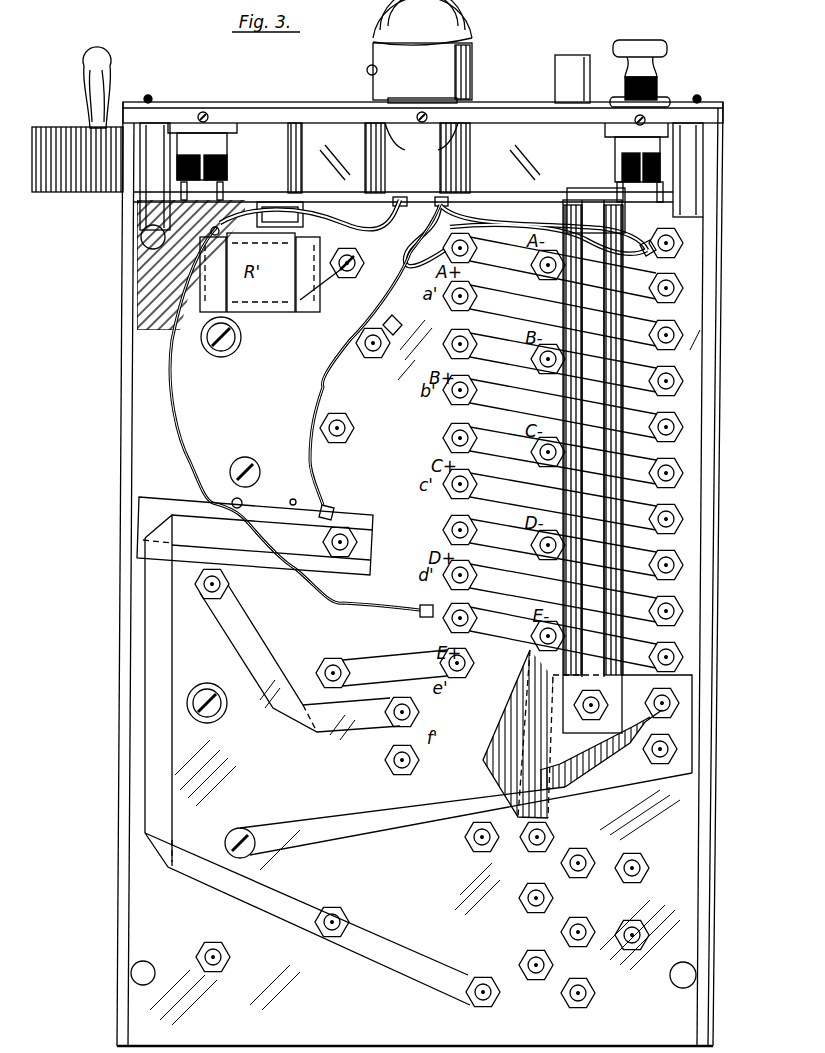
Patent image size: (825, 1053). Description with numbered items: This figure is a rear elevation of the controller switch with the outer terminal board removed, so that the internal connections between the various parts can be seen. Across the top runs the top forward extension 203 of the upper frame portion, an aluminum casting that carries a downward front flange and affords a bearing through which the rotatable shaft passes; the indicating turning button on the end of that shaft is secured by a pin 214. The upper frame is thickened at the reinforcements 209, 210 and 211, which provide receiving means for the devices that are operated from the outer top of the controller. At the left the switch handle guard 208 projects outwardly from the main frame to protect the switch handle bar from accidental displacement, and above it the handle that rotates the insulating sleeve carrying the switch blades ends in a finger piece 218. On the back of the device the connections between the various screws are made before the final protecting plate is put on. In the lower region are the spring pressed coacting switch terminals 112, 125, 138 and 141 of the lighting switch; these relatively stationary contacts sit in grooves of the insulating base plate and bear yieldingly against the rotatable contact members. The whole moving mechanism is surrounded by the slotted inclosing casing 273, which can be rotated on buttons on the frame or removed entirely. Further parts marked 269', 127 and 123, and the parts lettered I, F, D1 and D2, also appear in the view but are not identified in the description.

The top forward extension 203 is at (490, 112).
The switch handle guard 208 is at (58, 193).
The reinforcement 209 is at (238, 124).
The reinforcement 210 is at (462, 160).
The reinforcement 211 is at (667, 123).
The pin 214 is at (567, 72).
The finger piece 218 is at (117, 70).
The dome cap 269' is at (446, 51).
The inclosing casing 273 is at (117, 402).
The plate 127 is at (530, 700).
The spring pressed coacting switch terminal 125 is at (466, 838).
The nut 123 is at (553, 834).
The spring pressed coacting switch terminal 112 is at (648, 868).
The spring pressed coacting switch terminal 138 is at (648, 930).
The spring pressed coacting switch terminal 141 is at (480, 1005).
The terminal I is at (342, 534).
The terminal F is at (213, 946).
The terminal D1 is at (342, 417).
The terminal D2 is at (378, 347).